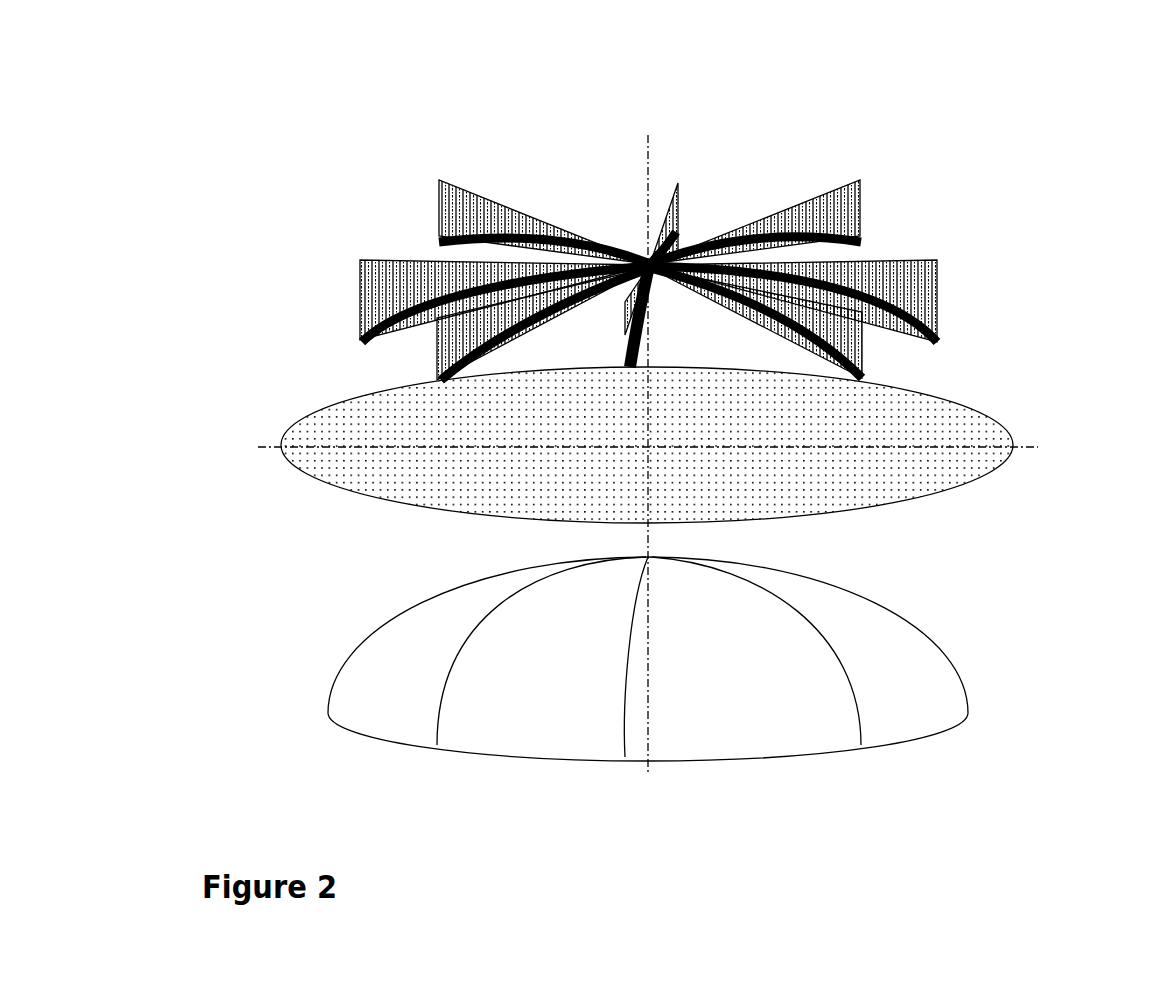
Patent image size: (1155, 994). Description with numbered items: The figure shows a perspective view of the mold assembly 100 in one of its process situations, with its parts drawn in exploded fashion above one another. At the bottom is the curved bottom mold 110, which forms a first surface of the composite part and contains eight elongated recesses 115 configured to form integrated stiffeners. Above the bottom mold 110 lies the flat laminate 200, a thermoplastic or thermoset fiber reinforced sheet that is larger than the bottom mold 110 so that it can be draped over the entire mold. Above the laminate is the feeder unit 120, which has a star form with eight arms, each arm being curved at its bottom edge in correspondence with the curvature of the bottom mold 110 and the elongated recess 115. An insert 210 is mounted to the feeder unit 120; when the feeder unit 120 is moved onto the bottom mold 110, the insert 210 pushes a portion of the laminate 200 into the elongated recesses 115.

The mold assembly 100 is at (958, 150).
The bottom mold 110 is at (358, 696).
The elongated recess 115 is at (470, 637).
The feeder unit 120 is at (463, 202).
The flat laminate 200 is at (975, 432).
The insert 210 is at (440, 240).